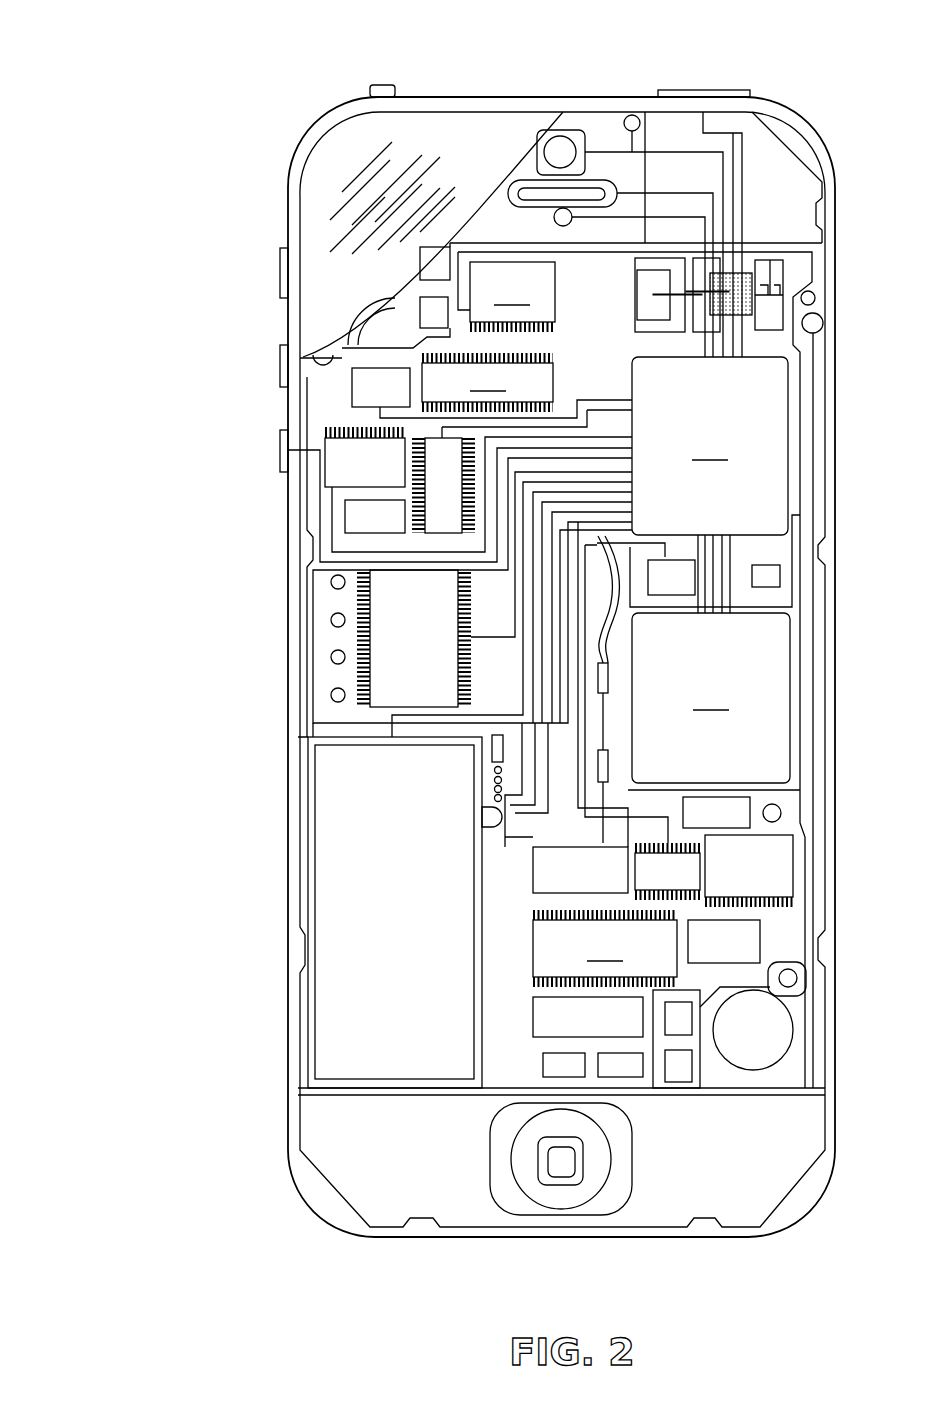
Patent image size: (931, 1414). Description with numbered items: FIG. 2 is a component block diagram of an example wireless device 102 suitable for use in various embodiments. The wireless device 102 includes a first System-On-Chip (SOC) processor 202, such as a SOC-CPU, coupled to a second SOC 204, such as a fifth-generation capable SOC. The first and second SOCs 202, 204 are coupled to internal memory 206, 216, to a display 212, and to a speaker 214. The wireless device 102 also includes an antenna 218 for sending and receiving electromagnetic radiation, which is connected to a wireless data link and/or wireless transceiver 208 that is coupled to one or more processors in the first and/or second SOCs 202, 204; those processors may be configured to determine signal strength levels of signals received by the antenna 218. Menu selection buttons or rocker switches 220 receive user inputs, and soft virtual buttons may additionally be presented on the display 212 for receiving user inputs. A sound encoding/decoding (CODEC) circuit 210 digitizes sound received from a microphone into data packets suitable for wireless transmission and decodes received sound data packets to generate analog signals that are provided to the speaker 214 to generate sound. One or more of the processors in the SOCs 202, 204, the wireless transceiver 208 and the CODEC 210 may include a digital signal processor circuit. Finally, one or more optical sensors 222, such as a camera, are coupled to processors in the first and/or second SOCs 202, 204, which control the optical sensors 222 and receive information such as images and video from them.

The wireless device 102 is at (60, 70).
The first System-On-Chip (SOC) processor 202 is at (710, 446).
The second SOC 204 is at (711, 698).
The internal memory 206 is at (487, 382).
The wireless transceiver 208 is at (745, 272).
The sound encoding/decoding (CODEC) circuit 210 is at (512, 294).
The display 212 is at (316, 206).
The speaker 214 is at (521, 183).
The internal memory 216 is at (605, 948).
The antenna 218 is at (368, 92).
The menu selection buttons or rocker switches 220 is at (283, 356).
The optical sensors 222 is at (632, 114).